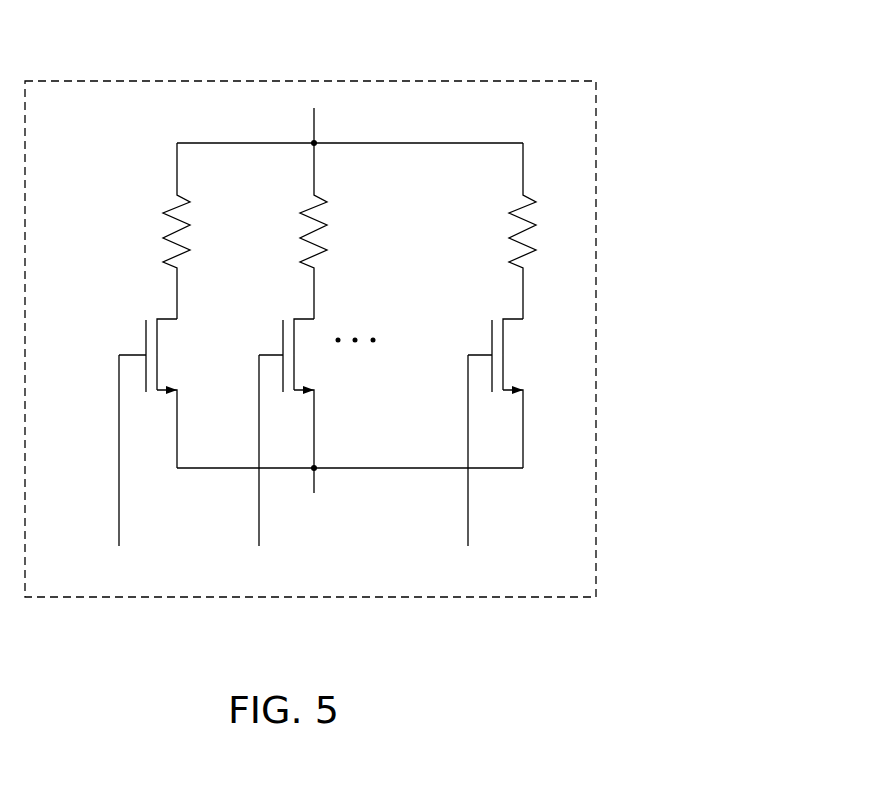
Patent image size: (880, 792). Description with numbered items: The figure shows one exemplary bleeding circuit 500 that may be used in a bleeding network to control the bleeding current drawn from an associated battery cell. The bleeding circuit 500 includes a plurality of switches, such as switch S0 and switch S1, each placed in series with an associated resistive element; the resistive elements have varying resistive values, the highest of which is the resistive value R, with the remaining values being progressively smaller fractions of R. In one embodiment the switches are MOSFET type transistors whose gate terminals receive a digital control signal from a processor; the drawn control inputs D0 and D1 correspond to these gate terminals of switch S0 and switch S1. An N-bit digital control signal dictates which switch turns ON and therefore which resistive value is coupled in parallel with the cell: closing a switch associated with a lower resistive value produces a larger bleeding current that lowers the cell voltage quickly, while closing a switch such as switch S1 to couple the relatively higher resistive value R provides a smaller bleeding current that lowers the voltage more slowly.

The bleeding circuit 500 is at (493, 81).
The resistive value R is at (158, 231).
The switch S0 is at (137, 393).
The switch S1 is at (279, 393).
The control input D0 is at (94, 450).
The control input D1 is at (239, 450).